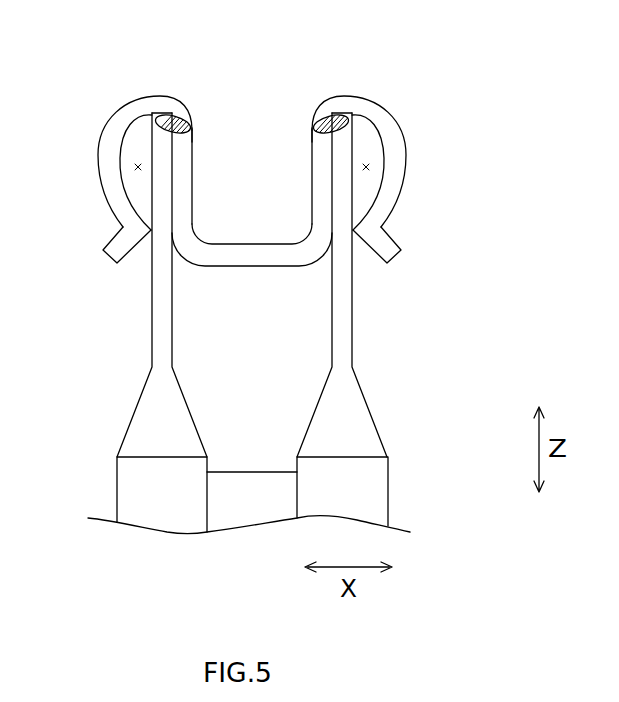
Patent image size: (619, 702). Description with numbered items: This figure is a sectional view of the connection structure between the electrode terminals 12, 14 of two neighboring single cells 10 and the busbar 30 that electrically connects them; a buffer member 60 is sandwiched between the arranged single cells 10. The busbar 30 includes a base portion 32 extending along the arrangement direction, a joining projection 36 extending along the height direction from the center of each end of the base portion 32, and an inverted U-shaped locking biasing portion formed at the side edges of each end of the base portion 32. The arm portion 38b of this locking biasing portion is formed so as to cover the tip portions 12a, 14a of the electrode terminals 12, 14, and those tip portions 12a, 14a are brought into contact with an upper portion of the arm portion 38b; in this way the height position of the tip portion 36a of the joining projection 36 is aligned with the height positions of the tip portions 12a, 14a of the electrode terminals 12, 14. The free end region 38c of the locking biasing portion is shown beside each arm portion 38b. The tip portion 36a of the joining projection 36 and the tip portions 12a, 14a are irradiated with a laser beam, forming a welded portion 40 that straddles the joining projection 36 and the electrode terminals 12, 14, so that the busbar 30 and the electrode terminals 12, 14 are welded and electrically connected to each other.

The single cell 10 is at (130, 488).
The electrode terminal 12 is at (361, 250).
The tip portion of electrode terminal 12a is at (352, 114).
The electrode terminal 14 is at (142, 250).
The tip portion of electrode terminal 14a is at (153, 114).
The busbar 30 is at (341, 80).
The base portion 32 is at (248, 268).
The joining projection 36 is at (311, 193).
The tip portion of joining projection 36a is at (309, 138).
The arm portion 38b is at (100, 135).
The free end portion 38c is at (134, 167).
The welded portion 40 is at (180, 117).
The buffer member 60 is at (245, 470).